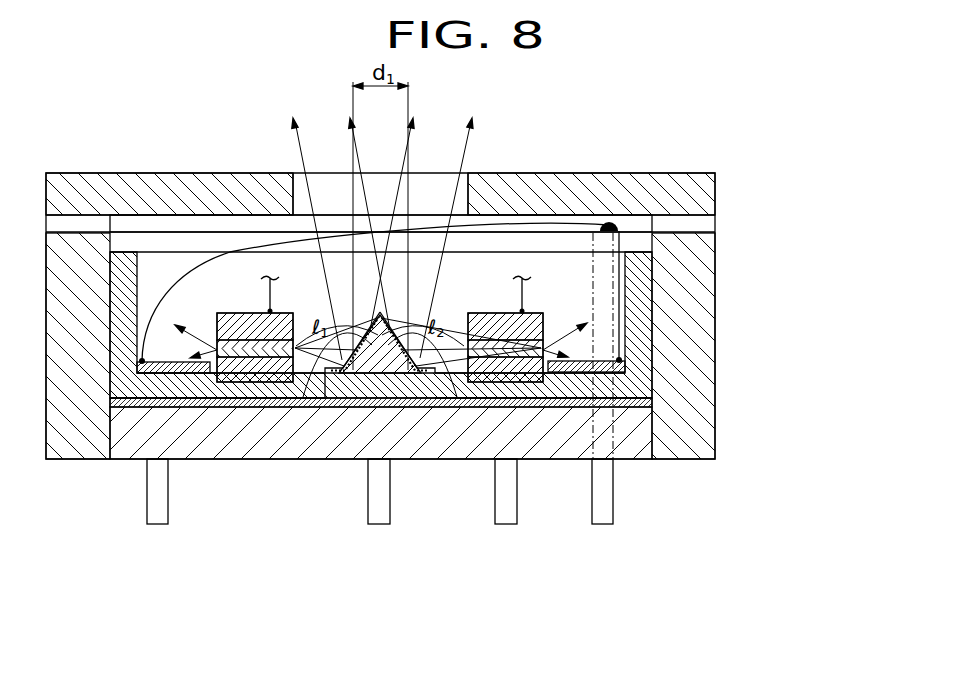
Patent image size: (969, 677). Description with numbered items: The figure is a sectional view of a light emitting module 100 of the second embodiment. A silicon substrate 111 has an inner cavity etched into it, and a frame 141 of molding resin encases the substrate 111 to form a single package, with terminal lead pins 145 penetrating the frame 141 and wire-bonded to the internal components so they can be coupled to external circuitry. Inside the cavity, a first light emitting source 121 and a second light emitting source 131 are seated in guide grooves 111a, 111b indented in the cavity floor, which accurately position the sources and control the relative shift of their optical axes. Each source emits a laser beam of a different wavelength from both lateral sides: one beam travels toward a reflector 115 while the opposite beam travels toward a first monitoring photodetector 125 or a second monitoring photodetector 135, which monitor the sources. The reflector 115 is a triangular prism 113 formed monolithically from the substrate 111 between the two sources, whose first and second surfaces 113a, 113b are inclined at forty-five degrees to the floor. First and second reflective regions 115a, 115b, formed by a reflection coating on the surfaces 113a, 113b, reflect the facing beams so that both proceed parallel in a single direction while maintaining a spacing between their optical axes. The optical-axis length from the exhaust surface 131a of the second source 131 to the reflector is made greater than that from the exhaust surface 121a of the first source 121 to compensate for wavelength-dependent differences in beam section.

The light emitting module 100 is at (745, 204).
The substrate 111 is at (637, 377).
The first guide groove 111a is at (234, 376).
The second guide groove 111b is at (552, 374).
The prism 113 is at (376, 440).
The first surface 113a is at (350, 358).
The second surface 113b is at (380, 347).
The reflector 115 is at (395, 488).
The first reflective region 115a is at (302, 398).
The second reflective region 115b is at (447, 463).
The first light emitting source 121 is at (237, 227).
The exhaust surface of first light emitting source 121a is at (294, 326).
The first monitoring photodetector 125 is at (143, 374).
The second light emitting source 131 is at (543, 242).
The exhaust surface of second light emitting source 131a is at (468, 326).
The second monitoring photodetector 135 is at (598, 373).
The frame 141 is at (715, 440).
The lead pins 145 is at (602, 512).